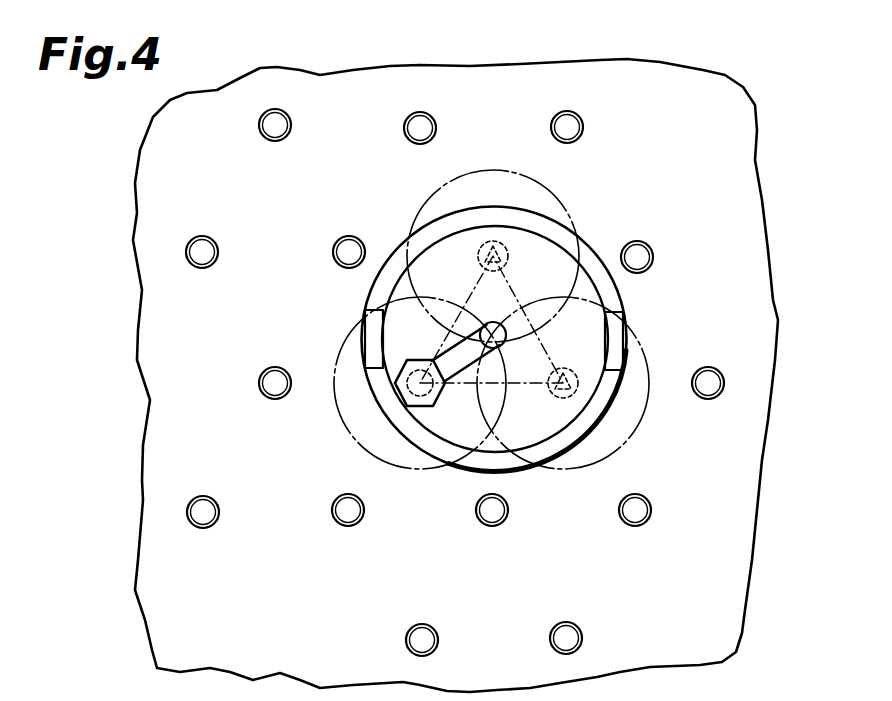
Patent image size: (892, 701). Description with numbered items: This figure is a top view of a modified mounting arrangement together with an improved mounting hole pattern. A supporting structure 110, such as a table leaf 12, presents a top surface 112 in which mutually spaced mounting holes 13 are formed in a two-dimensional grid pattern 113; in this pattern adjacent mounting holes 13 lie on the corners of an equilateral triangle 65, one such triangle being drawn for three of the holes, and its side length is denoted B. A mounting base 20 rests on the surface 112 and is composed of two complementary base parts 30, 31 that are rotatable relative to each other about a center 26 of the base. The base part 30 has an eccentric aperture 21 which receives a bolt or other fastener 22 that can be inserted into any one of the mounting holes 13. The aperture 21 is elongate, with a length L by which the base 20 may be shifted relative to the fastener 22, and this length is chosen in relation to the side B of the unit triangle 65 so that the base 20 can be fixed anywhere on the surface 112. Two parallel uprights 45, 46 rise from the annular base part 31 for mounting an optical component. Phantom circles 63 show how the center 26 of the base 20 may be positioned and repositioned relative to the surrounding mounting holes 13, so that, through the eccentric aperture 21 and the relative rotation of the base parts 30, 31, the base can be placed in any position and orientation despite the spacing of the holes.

The leaf 12 is at (703, 87).
The mounting holes 13 is at (618, 522).
The mounting base 20 is at (600, 240).
The eccentric aperture 21 is at (466, 372).
The fastener 22 is at (398, 400).
The pivot 26 is at (501, 347).
The base part 30 is at (540, 427).
The annular base part 31 is at (485, 468).
The upright 45 is at (366, 333).
The upright 46 is at (625, 327).
The phantom circles 63 is at (507, 170).
The equilateral triangle 65 is at (513, 287).
The supporting structure 110 is at (160, 152).
The top surface 112 is at (244, 312).
The grid pattern 113 is at (413, 527).
The side of the unit triangle B is at (466, 298).
The length of the elongate aperture L is at (452, 342).